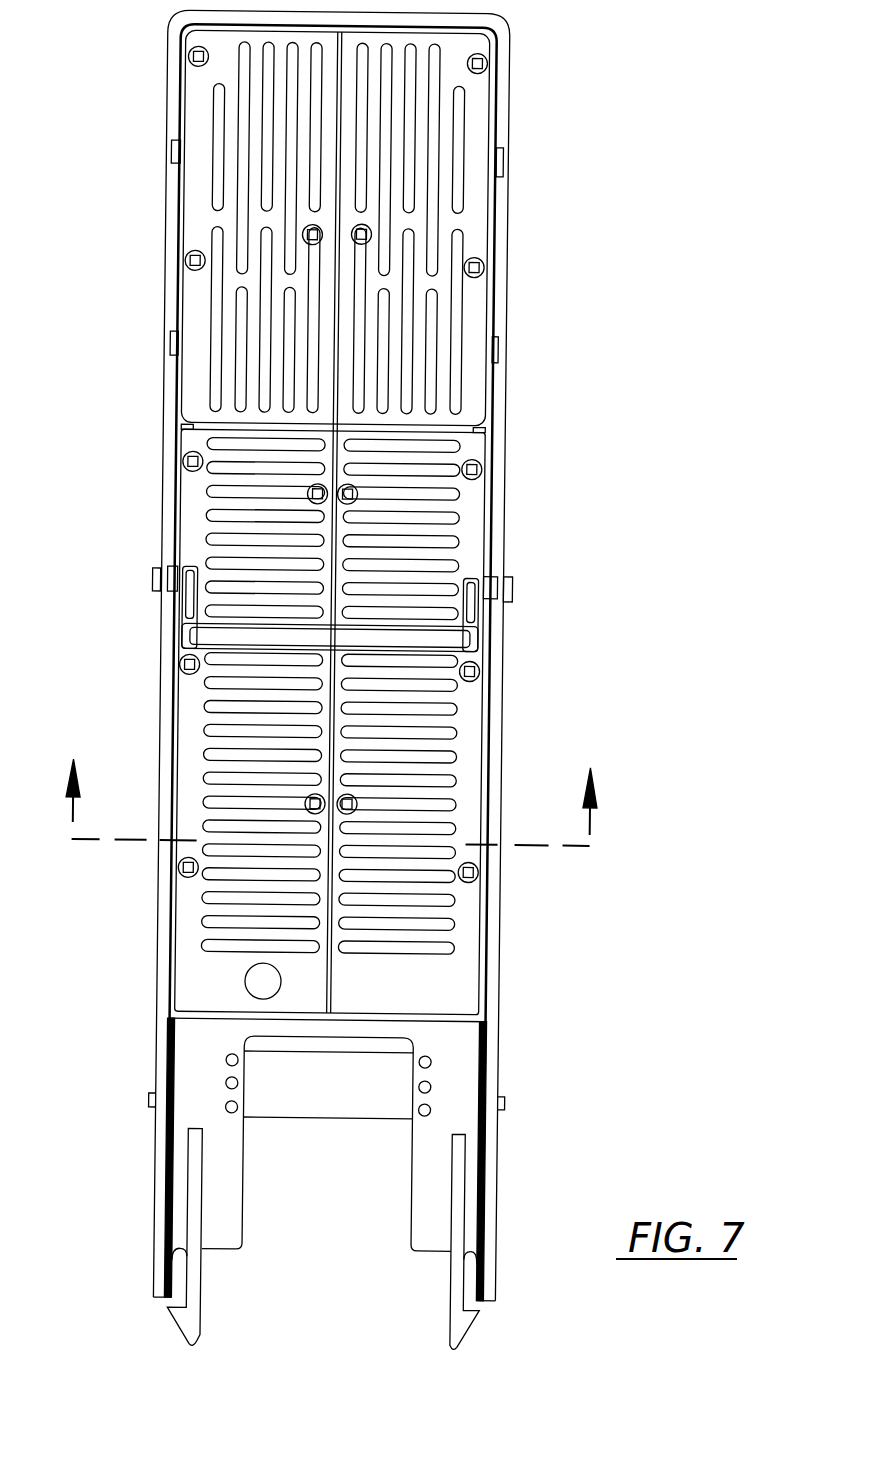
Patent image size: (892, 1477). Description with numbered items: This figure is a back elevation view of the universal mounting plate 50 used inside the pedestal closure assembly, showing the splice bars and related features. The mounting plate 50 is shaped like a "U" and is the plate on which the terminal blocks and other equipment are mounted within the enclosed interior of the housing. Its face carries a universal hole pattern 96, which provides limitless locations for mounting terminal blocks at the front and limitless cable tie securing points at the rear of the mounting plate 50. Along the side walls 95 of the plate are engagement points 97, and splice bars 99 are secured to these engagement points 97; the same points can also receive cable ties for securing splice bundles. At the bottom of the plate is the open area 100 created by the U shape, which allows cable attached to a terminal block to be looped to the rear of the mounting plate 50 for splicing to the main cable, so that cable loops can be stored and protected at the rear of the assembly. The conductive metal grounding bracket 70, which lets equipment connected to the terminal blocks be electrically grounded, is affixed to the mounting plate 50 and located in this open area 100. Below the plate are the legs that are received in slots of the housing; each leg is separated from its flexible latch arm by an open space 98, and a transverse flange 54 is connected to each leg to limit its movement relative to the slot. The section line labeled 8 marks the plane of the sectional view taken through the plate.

The universal mounting plate 50 is at (524, 115).
The transverse flange 54 is at (517, 1098).
The grounding bracket 70 is at (274, 1078).
The side walls 95 is at (173, 456).
The universal hole pattern 96 is at (220, 186).
The engagement points 97 is at (174, 570).
The open space 98 is at (194, 1265).
The splice bars 99 is at (194, 639).
The open area 100 is at (353, 1200).
The section line 8- 8 is at (332, 828).